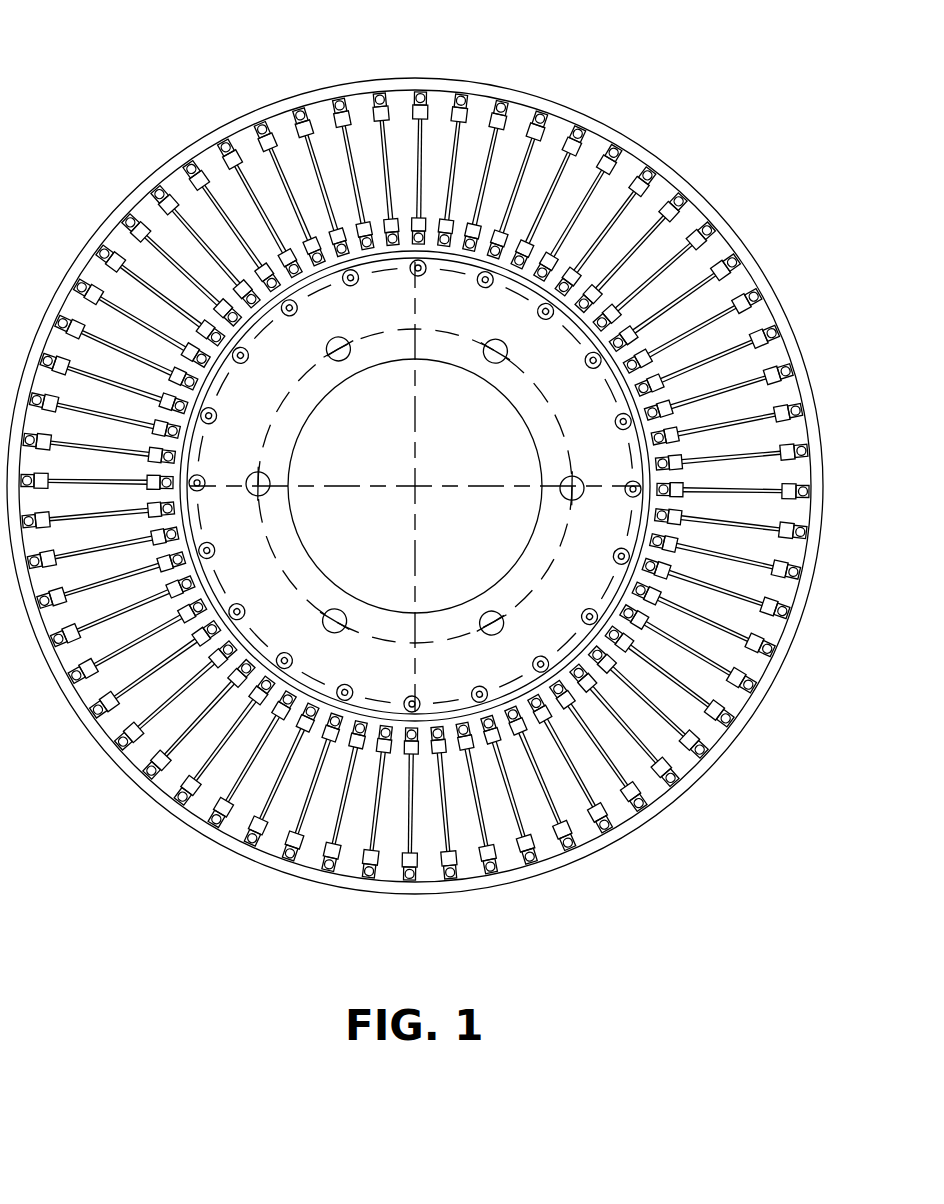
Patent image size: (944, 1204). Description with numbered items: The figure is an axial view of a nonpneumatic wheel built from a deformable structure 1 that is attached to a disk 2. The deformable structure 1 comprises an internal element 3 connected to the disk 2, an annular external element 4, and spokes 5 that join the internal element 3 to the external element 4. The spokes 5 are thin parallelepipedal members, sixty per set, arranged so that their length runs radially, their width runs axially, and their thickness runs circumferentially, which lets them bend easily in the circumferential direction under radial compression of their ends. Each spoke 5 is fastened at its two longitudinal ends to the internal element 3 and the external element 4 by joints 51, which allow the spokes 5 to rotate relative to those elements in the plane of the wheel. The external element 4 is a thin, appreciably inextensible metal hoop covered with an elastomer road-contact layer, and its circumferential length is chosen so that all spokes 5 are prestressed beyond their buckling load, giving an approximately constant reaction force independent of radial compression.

The deformable structure 1 is at (163, 117).
The disk 2 is at (415, 486).
The internal element 3 is at (483, 505).
The annular external element 4 is at (242, 324).
The spokes 5 is at (438, 517).
The joints 51 is at (438, 486).